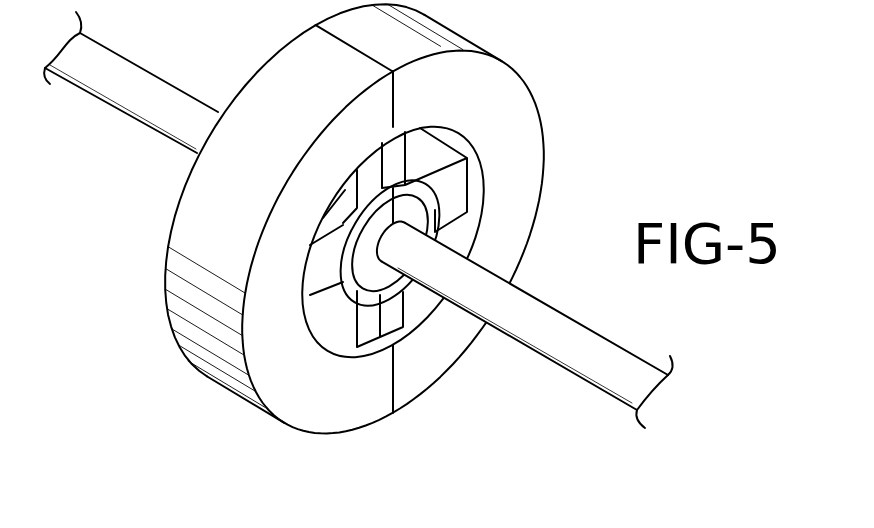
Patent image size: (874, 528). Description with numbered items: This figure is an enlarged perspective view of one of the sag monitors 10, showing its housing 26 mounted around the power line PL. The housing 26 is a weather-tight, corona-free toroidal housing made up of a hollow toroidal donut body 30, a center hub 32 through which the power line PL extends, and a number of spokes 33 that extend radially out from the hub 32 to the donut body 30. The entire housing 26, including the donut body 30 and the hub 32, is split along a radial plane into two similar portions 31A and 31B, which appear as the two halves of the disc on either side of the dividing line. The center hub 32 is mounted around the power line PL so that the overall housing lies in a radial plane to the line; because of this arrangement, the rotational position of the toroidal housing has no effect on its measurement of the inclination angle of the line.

The power line monitoring device 10 is at (146, 202).
The housing 26 is at (520, 55).
The toroidal body 30 is at (520, 106).
The portion 31A is at (358, 412).
The portion 31B is at (422, 377).
The center hub 32 is at (423, 217).
The spokes 33 is at (458, 180).
The power line PL is at (118, 68).